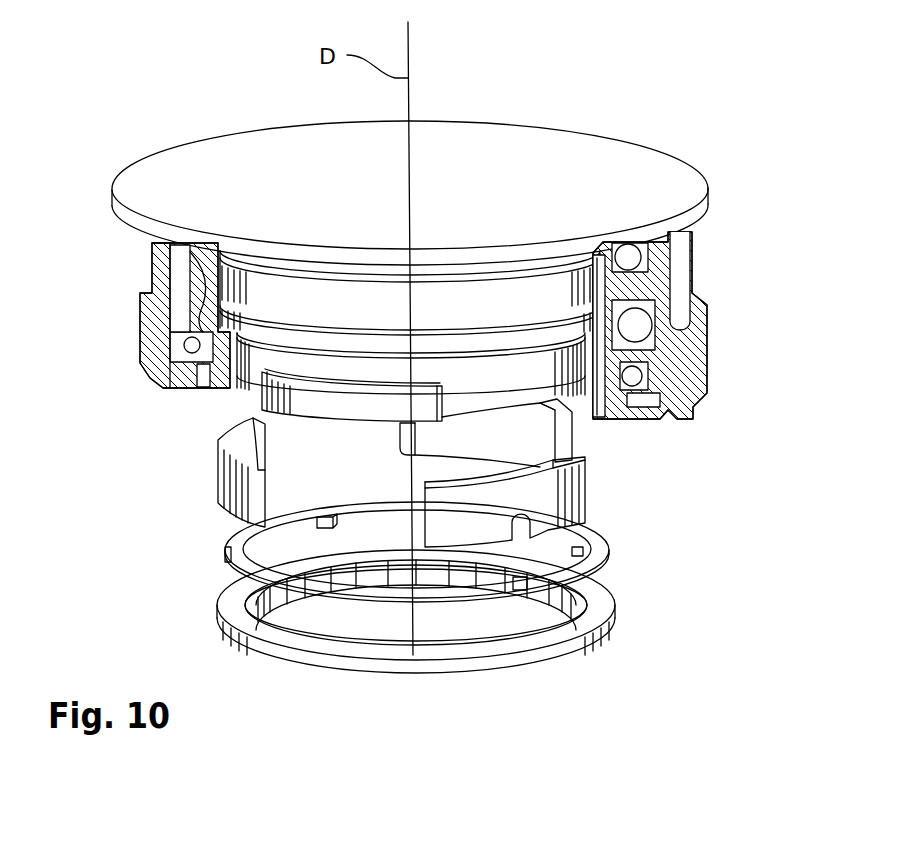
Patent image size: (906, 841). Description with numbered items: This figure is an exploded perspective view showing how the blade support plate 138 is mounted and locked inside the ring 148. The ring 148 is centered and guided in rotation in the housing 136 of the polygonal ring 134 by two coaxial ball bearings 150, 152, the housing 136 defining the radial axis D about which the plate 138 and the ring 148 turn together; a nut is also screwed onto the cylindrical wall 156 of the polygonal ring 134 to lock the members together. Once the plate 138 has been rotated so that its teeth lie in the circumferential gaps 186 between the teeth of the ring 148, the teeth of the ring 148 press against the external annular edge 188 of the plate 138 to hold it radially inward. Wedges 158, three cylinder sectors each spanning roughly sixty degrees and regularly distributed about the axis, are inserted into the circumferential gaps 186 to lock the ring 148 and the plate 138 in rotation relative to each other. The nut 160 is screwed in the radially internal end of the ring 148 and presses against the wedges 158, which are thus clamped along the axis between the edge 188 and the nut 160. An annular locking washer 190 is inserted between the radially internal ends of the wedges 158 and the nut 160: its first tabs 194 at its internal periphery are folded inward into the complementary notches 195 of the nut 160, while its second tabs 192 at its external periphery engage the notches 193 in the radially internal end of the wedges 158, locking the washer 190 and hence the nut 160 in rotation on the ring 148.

The polygonal ring 134 is at (710, 322).
The housing 136 is at (185, 293).
The blade support plate 138 is at (245, 184).
The ring 148 is at (706, 316).
The ball bearing 150 is at (644, 256).
The ball bearing 152 is at (688, 400).
The cylindrical wall 156 is at (150, 330).
The wedges 158 is at (590, 470).
The nut 160 is at (618, 618).
The circumferential gaps 186 is at (478, 382).
The external annular edge 188 is at (378, 362).
The annular locking washer 190 is at (232, 562).
The second tabs 192 is at (226, 550).
The notches 193 is at (548, 503).
The first tabs 194 is at (324, 515).
The notches 195 is at (452, 573).